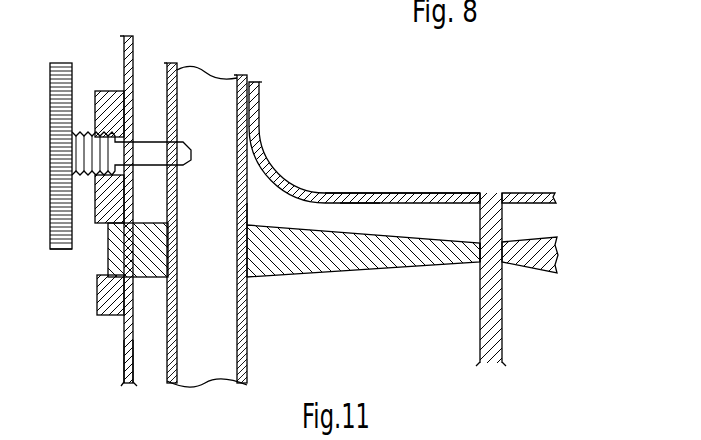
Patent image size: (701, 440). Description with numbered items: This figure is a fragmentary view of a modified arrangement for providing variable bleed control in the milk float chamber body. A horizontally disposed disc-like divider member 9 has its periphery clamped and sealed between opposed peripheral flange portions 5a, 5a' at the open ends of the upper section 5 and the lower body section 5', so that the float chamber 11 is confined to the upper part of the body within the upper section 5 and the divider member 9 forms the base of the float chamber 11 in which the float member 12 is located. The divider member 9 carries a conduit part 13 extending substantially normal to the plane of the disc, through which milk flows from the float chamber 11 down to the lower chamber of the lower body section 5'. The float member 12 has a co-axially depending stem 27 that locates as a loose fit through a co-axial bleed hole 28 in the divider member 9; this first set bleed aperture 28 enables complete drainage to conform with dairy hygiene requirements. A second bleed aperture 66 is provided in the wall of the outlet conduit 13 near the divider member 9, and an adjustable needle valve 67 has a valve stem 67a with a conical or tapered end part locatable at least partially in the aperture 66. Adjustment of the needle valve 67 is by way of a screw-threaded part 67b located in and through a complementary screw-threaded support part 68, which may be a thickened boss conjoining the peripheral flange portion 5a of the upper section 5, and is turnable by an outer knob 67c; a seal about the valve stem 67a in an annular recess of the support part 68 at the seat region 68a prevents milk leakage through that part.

The adjustable needle valve 67 is at (78, 63).
The valve stem 67a is at (168, 112).
The screw-threaded part 67b is at (148, 153).
The outer knob 67c is at (63, 240).
The screw-threaded support part 68 is at (97, 90).
The nut seat 68a is at (248, 203).
The upper section 5 is at (151, 202).
The peripheral flange portion 5a is at (93, 246).
The peripheral flange portion 5a' is at (101, 316).
The lower body section 5' is at (107, 365).
The divider member 9 is at (317, 266).
The float chamber 11 is at (277, 210).
The float member 12 is at (362, 200).
The conduit part 13 is at (177, 182).
The depending stem 27 is at (486, 316).
The bleed hole 28 is at (478, 263).
The second bleed aperture 66 is at (177, 145).